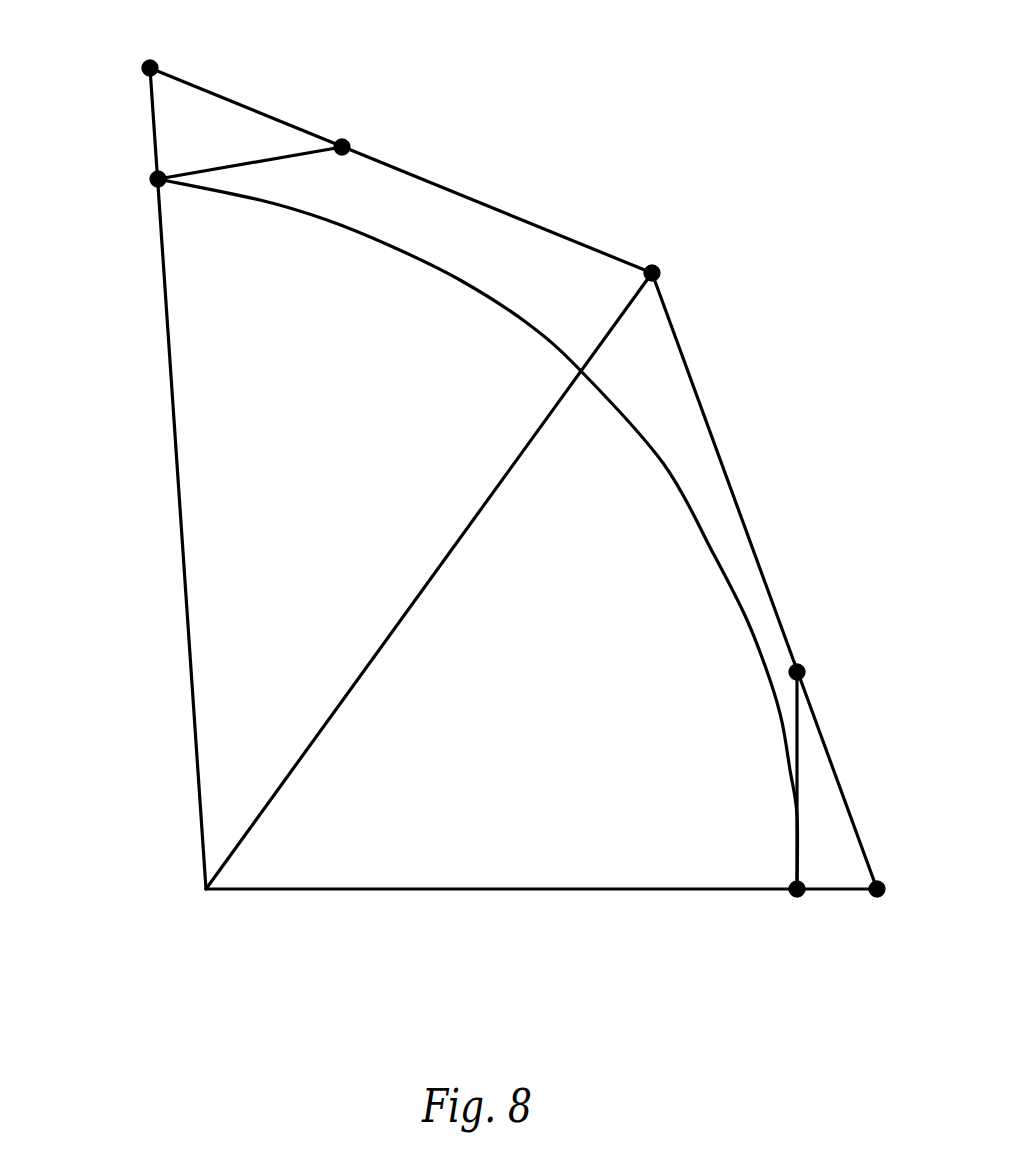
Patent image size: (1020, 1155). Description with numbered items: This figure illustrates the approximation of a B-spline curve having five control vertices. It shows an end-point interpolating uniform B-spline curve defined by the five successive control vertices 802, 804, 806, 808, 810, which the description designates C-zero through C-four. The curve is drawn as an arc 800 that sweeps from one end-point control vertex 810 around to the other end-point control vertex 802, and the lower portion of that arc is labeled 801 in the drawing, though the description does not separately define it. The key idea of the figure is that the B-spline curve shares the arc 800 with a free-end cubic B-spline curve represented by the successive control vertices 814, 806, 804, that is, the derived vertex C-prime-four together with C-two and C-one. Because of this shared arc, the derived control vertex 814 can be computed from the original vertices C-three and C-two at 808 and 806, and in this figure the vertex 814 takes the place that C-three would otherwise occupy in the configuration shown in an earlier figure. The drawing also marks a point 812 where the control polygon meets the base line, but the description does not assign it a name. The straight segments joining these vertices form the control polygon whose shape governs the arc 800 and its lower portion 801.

The arc 800 is at (392, 248).
The second curve segment 801 is at (714, 554).
The control vertex C0 802 is at (797, 895).
The control vertex C1 804 is at (805, 672).
The control vertex C2 806 is at (660, 273).
The control vertex C3 808 is at (350, 147).
The control vertex C4 810 is at (152, 179).
The tangent line intersection point 812 is at (874, 897).
The control vertex C'4 814 is at (144, 67).